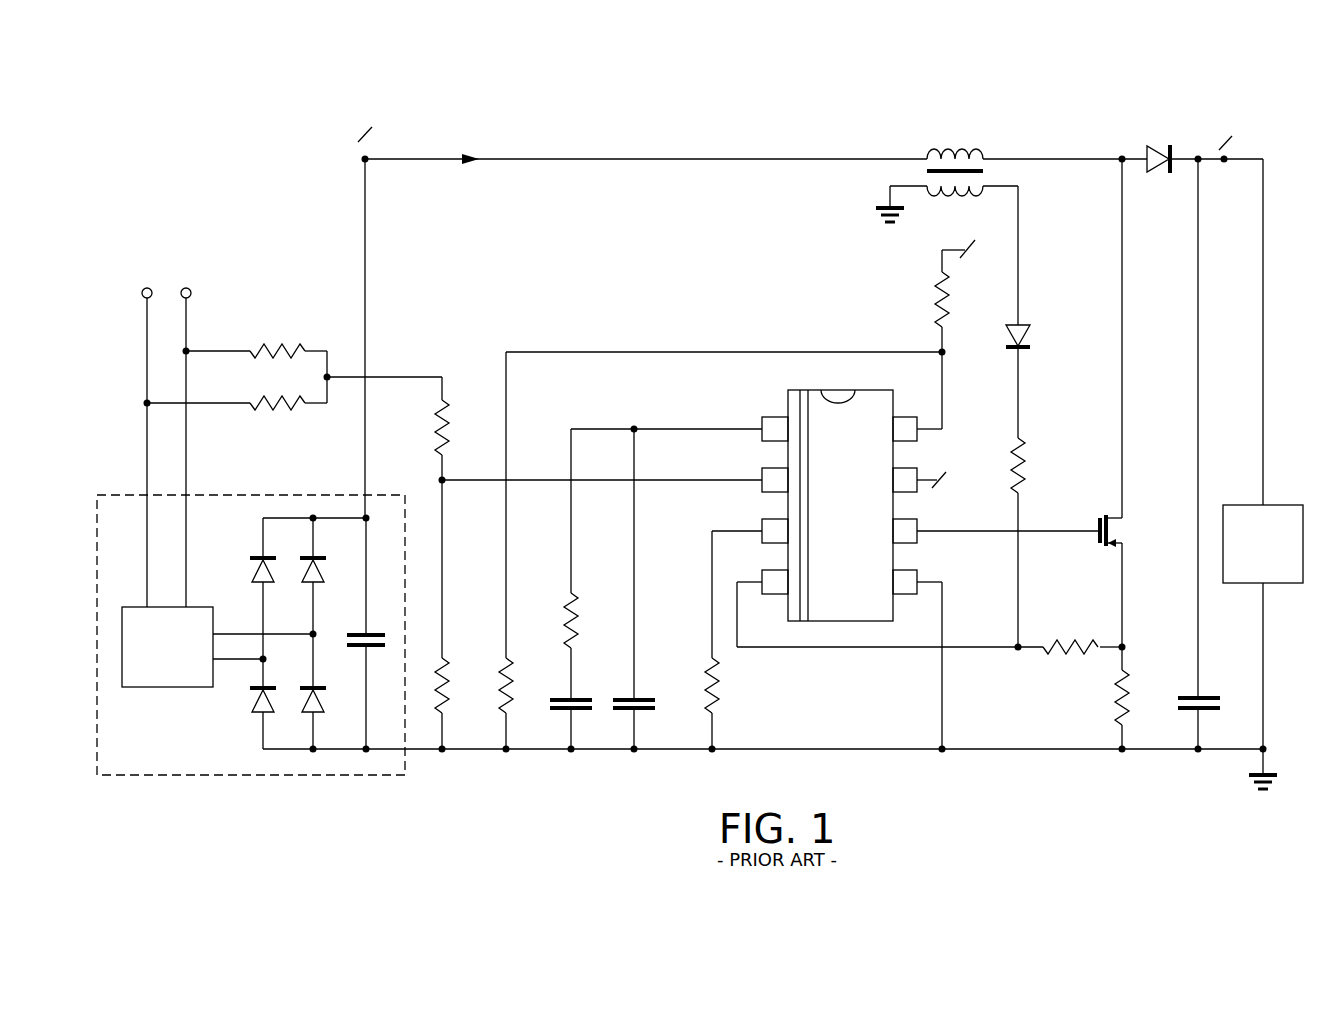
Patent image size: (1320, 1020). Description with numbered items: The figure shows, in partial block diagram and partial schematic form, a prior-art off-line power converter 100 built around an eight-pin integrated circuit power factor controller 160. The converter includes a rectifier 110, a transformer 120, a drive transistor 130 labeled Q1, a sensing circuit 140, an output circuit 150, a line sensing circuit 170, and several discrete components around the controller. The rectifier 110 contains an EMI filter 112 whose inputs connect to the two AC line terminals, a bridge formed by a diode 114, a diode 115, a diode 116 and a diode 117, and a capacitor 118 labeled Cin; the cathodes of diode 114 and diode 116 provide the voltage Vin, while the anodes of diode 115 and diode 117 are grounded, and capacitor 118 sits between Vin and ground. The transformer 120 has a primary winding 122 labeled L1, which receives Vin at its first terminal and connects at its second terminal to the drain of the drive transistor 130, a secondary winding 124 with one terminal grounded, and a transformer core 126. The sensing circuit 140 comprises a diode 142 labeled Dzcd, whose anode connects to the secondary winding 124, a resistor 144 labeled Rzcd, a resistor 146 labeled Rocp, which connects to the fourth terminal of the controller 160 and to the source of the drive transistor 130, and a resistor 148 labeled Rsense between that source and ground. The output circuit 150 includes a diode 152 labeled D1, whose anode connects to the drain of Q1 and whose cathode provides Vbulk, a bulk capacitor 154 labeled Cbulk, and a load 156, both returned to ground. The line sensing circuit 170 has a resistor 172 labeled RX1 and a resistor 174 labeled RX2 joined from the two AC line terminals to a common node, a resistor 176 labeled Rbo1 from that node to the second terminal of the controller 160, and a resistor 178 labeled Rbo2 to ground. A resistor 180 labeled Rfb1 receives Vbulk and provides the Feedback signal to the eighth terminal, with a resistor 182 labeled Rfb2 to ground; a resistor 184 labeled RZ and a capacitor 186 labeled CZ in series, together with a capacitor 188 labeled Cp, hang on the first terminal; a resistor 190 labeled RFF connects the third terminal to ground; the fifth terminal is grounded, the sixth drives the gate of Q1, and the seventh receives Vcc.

The off-line power converter 100 is at (593, 826).
The rectifier 110 is at (228, 494).
The electromagnetic interference (EMI) filter 112 is at (152, 688).
The diode 114 is at (254, 578).
The diode 115 is at (254, 706).
The diode 116 is at (318, 578).
The diode 117 is at (318, 706).
The capacitor 118 is at (370, 632).
The transformer 120 is at (936, 130).
The primary winding 122 is at (984, 142).
The secondary winding 124 is at (983, 198).
The transformer core 126 is at (985, 171).
The drive transistor 130 is at (1101, 546).
The sensing circuit 140 is at (1102, 776).
The diode 142 is at (1026, 326).
The resistor 144 is at (1010, 452).
The resistor 146 is at (1084, 641).
The resistor 148 is at (1130, 698).
The output circuit 150 is at (1209, 776).
The diode 152 is at (1168, 144).
The bulk capacitor 154 is at (1188, 694).
The load 156 is at (1276, 503).
The integrated circuit power factor controller 160 is at (866, 557).
The line sensing circuit 170 is at (275, 282).
The resistor 172 is at (290, 346).
The resistor 174 is at (288, 412).
The resistor 176 is at (436, 435).
The resistor 178 is at (437, 666).
The resistor 180 is at (936, 302).
The resistor 182 is at (502, 666).
The resistor 184 is at (563, 628).
The capacitor 186 is at (578, 696).
The capacitor 188 is at (640, 696).
The resistor 190 is at (706, 666).